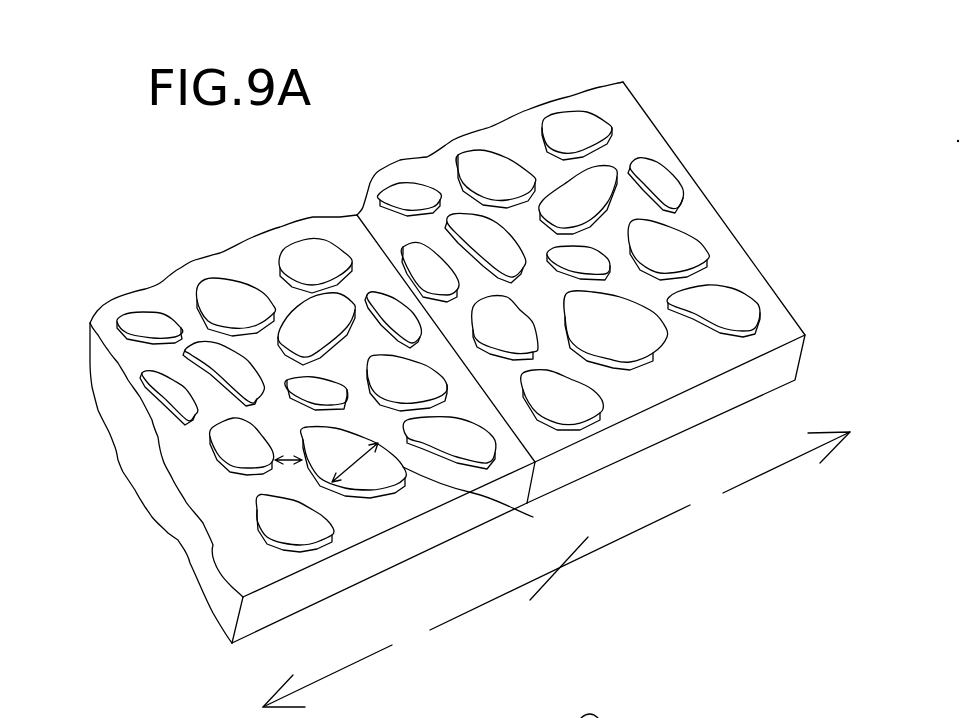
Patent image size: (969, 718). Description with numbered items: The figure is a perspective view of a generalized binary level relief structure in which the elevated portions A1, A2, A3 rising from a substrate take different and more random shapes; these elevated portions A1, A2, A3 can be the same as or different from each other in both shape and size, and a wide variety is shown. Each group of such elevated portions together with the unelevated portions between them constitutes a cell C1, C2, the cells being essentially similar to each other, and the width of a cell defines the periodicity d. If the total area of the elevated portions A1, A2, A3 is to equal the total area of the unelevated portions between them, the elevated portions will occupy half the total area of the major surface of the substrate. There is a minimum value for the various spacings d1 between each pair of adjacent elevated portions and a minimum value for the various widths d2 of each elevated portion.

The cell C1 is at (240, 262).
The cell C2 is at (515, 137).
The elevated portion A1 is at (233, 447).
The elevated portion A2 is at (293, 528).
The elevated portion A3 is at (602, 567).
The spacing between adjacent elevated portions d1 is at (298, 465).
The width of elevated portion d2 is at (362, 487).
The periodicity d is at (556, 569).